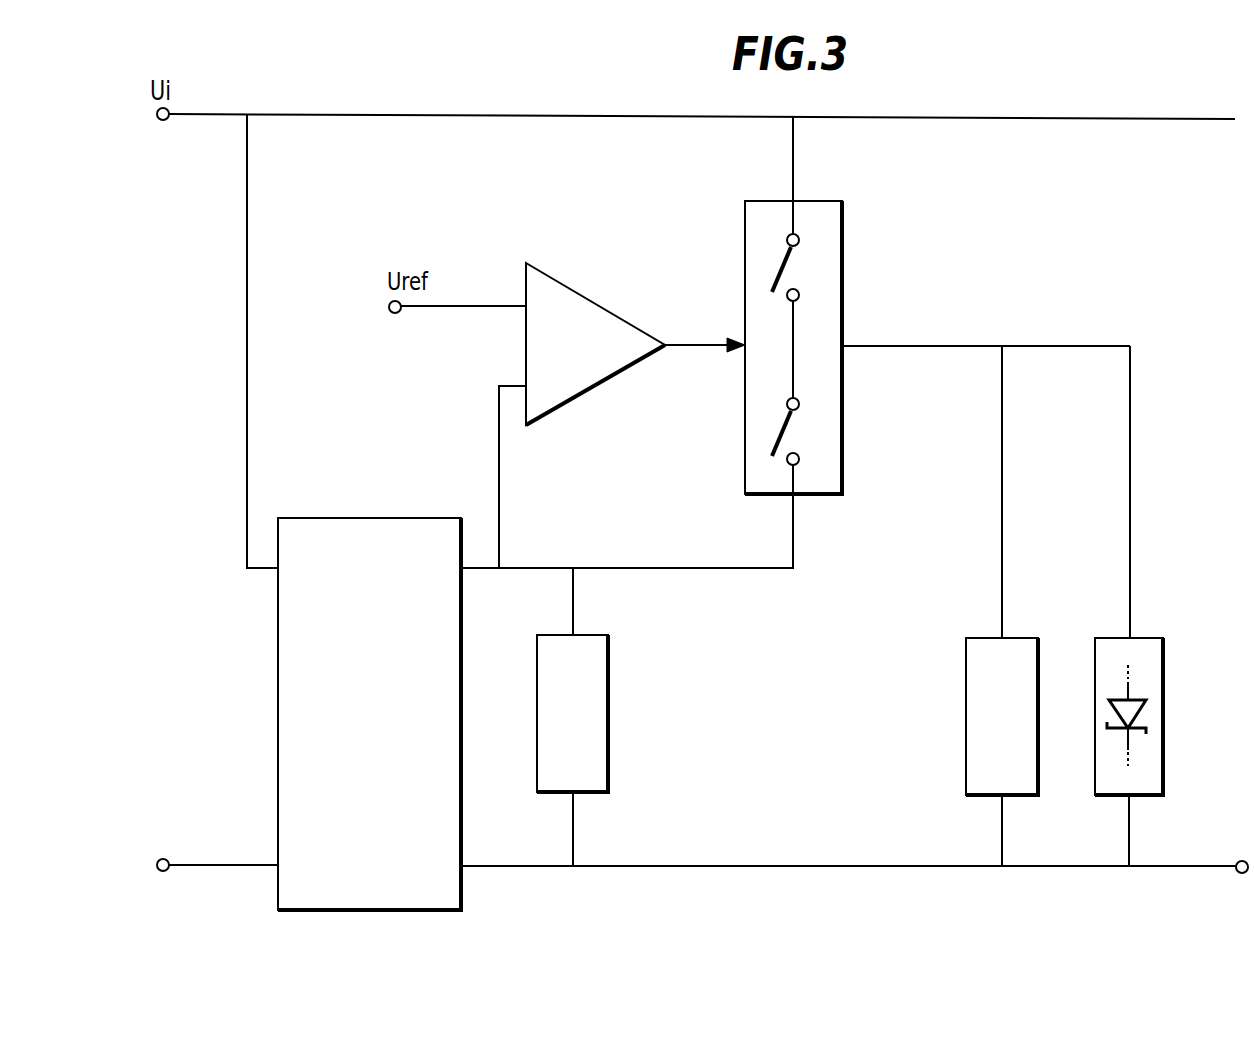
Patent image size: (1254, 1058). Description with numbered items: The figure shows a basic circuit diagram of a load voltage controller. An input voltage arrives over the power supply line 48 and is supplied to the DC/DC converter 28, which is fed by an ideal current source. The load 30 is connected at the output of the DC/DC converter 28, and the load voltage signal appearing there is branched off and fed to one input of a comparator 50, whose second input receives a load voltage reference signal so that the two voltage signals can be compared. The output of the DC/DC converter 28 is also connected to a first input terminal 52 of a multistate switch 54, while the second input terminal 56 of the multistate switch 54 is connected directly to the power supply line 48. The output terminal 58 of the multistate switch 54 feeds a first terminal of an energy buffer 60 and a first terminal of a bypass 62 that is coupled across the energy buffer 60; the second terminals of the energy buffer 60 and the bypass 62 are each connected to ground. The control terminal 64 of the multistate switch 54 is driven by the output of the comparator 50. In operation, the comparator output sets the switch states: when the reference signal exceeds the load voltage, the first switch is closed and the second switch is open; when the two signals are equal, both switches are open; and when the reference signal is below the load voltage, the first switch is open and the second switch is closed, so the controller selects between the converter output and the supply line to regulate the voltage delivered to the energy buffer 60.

The DC/DC converter 28 is at (355, 517).
The load 30 is at (610, 728).
The power supply line 48 is at (1186, 118).
The comparator 50 is at (647, 284).
The first input terminal 52 is at (795, 497).
The multistate switch 54 is at (843, 245).
The upper switch connection to input voltage 56 is at (796, 201).
The output terminal 58 is at (843, 345).
The energy buffer 60 is at (965, 733).
The bypass 62 is at (1165, 735).
The control terminal 64 is at (742, 340).